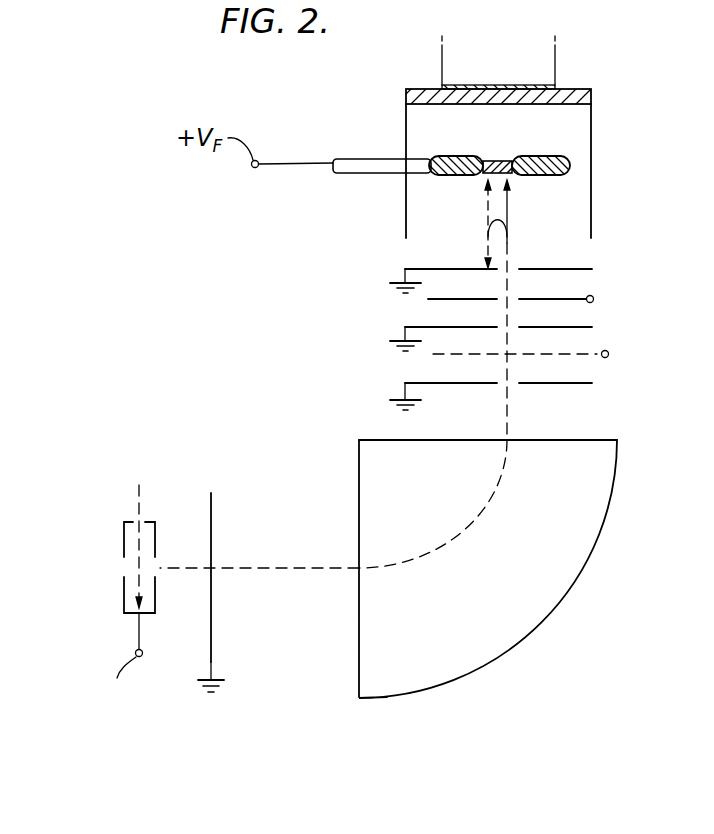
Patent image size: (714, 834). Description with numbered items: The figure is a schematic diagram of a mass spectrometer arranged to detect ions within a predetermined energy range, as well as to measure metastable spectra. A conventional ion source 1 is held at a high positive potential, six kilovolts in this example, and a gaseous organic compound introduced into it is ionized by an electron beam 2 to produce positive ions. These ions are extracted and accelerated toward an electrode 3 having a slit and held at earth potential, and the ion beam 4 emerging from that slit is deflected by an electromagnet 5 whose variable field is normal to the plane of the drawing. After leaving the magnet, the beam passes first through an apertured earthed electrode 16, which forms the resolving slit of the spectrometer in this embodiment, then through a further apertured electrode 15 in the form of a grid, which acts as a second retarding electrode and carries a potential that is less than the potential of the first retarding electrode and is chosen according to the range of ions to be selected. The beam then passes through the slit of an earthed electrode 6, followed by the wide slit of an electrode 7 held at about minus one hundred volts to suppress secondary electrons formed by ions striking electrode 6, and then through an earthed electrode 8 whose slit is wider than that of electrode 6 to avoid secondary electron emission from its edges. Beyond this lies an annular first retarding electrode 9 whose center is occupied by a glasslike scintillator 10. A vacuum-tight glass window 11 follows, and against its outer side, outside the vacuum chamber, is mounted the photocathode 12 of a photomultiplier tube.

The ion source 1 is at (124, 538).
The electron beam 2 is at (141, 510).
The electrode 3 is at (213, 506).
The ion beam 4 is at (262, 545).
The electromagnet 5 is at (537, 628).
The earthed electrode 6 is at (563, 328).
The electrode 7 is at (553, 297).
The earthed electrode 8 is at (551, 266).
The first retarding electrode 9 is at (556, 158).
The scintillator 10 is at (496, 160).
The glass window 11 is at (419, 92).
The photocathode 12 is at (535, 85).
The apertured electrode 15 is at (436, 356).
The apertured earthed electrode 16 is at (555, 384).